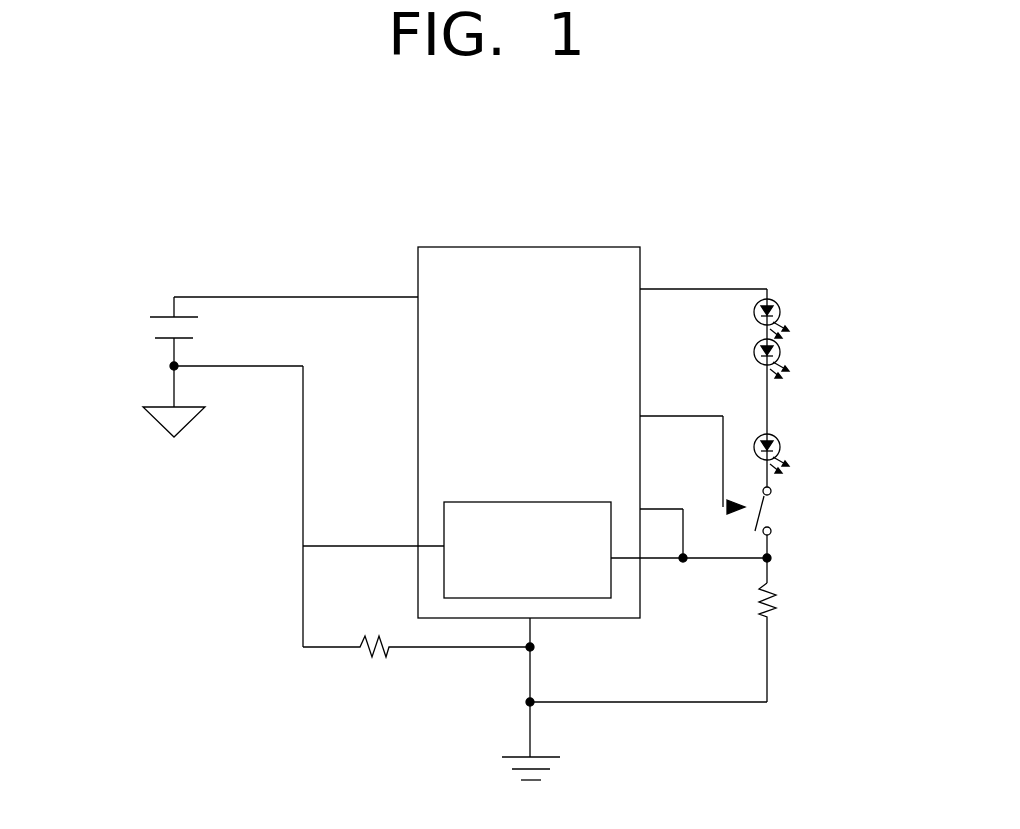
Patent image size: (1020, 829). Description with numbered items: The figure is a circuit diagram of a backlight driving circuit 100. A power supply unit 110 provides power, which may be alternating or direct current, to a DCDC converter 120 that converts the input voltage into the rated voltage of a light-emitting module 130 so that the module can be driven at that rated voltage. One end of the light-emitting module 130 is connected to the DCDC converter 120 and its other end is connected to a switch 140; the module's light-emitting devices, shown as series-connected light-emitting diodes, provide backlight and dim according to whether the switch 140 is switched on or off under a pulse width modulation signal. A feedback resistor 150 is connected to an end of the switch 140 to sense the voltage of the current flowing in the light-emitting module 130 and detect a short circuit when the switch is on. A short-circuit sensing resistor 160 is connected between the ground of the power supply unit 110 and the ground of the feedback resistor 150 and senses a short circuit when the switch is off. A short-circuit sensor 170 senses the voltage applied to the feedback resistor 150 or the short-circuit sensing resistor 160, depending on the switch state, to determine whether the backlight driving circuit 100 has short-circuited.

The backlight driving circuit 100 is at (369, 117).
The power supply unit 110 is at (150, 317).
The DCDC converter 120 is at (525, 247).
The light-emitting module 130 is at (797, 460).
The switch 140 is at (772, 489).
The feedback resistor 150 is at (777, 596).
The short-circuit sensing resistor 160 is at (370, 657).
The short-circuit sensor 170 is at (580, 598).